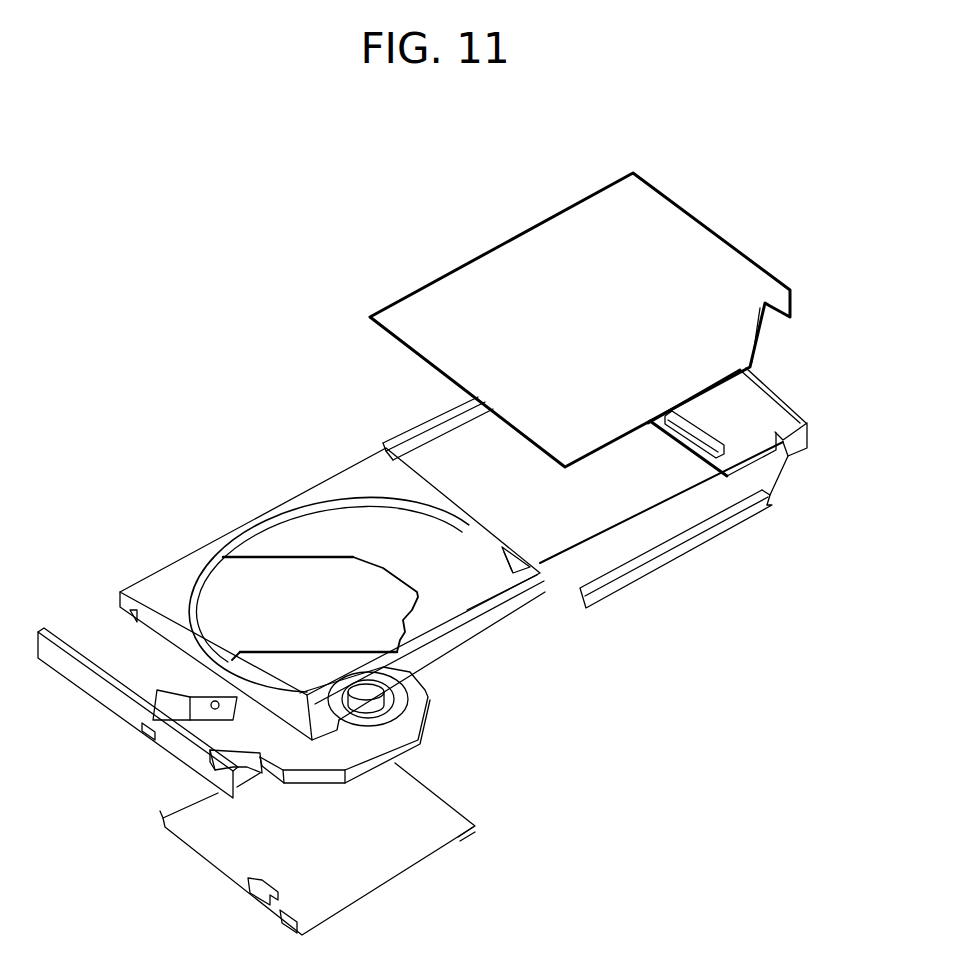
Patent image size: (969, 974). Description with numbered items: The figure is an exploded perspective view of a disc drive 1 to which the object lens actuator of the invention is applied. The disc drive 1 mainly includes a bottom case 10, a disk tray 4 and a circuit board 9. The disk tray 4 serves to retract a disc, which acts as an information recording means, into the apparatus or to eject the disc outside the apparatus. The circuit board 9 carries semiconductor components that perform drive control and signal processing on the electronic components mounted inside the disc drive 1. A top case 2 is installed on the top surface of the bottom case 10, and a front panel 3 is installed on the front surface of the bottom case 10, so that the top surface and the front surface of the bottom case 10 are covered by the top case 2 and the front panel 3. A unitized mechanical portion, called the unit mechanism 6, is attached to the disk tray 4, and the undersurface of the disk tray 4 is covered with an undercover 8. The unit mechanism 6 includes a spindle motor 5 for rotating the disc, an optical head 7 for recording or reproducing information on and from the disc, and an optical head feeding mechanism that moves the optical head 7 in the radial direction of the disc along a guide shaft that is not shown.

The disc drive 1 is at (443, 568).
The top case 2 is at (580, 320).
The front panel 3 is at (130, 713).
The disk tray 4 is at (332, 585).
The spindle motor 5 is at (420, 688).
The unit mechanism 6 is at (381, 731).
The optical head 7 is at (157, 669).
The undercover 8 is at (317, 863).
The circuit board 9 is at (757, 415).
The bottom case 10 is at (679, 561).